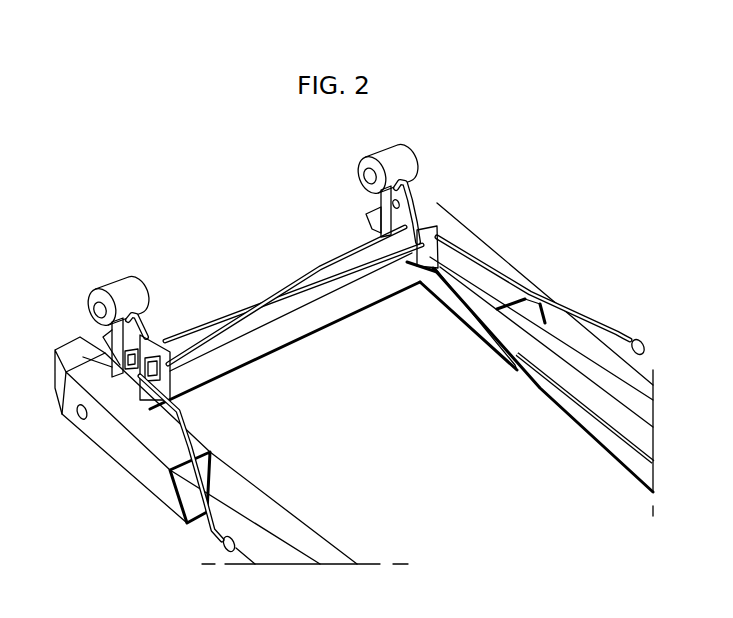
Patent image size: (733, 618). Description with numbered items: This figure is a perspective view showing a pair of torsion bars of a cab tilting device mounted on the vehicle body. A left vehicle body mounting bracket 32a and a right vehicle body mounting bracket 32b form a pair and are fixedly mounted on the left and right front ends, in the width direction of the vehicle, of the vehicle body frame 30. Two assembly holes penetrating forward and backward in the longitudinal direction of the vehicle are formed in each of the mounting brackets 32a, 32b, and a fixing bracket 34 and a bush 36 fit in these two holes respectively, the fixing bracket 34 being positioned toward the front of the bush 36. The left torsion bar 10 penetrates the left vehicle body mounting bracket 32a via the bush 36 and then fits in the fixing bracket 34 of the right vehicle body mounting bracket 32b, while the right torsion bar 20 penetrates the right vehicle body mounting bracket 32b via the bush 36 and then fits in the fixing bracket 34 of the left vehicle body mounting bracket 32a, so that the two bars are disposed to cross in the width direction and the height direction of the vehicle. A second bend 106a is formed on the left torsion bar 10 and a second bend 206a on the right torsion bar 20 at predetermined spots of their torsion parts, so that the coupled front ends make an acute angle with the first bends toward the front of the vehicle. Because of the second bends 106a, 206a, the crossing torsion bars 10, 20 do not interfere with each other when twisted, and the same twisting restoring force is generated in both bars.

The left torsion bar 10 is at (213, 532).
The right torsion bar 20 is at (582, 315).
The vehicle body frame 30 is at (568, 415).
The left vehicle body mounting bracket 32a is at (92, 338).
The right vehicle body mounting bracket 32b is at (417, 207).
The fixing bracket 34 is at (382, 208).
The bush 36 is at (437, 219).
The second bend of the left torsion bar 106a is at (263, 300).
The second bend of the right torsion bar 206a is at (200, 330).